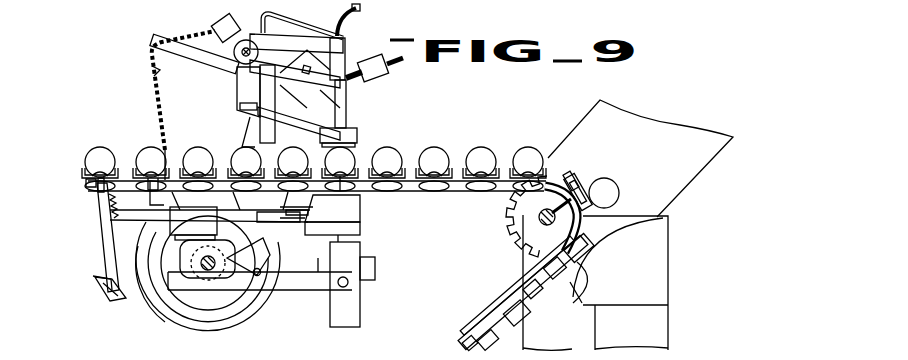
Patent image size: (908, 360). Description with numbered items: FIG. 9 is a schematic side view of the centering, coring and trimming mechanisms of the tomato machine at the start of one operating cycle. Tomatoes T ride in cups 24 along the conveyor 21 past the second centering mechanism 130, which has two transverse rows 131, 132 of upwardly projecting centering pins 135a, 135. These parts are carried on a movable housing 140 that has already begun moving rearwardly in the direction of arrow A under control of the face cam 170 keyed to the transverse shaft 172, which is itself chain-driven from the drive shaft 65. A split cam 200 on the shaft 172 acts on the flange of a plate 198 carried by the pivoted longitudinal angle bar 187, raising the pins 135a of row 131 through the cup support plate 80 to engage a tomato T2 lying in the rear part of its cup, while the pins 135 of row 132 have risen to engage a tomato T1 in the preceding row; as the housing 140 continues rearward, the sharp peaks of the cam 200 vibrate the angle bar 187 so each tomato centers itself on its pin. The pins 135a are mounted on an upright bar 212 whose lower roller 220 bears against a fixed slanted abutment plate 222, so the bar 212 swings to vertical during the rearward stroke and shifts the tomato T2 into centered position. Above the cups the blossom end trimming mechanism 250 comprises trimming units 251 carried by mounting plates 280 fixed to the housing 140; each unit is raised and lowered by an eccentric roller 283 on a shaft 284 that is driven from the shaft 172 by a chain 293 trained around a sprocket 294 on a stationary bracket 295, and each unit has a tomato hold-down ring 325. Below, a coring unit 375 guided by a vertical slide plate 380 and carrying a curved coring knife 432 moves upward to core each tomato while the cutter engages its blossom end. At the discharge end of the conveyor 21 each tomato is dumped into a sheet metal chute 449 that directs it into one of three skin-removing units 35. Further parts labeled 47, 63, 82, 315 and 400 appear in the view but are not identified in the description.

The conveyor 21 is at (78, 195).
The cups 24 is at (524, 319).
The skin-removing units 35 is at (672, 323).
The inclined conveyor 47 is at (527, 279).
The clamp 63 is at (550, 199).
The drive shaft 65 is at (579, 187).
The cup support plate 80 is at (517, 293).
The conveyor chain 82 is at (519, 192).
The second centering mechanism 130 is at (103, 238).
The transverse row of centering pins 131 is at (93, 193).
The transverse row of centering pins 132 is at (137, 168).
The centering pins 135 is at (157, 172).
The centering pins 135a is at (97, 181).
The movable housing 140 is at (318, 276).
The face cam 170 is at (187, 332).
The transverse shaft 172 is at (206, 266).
The longitudinal angle bar 187 is at (320, 215).
The plate 198 is at (210, 233).
The split cam 200 is at (200, 280).
The upright bar 212 is at (112, 259).
The roller 220 is at (123, 293).
The abutment plate 222 is at (98, 278).
The blossom end trimming mechanism 250 is at (366, 28).
The trimming unit 251 is at (362, 100).
The mounting plate 280 is at (244, 148).
The eccentric roller 283 is at (242, 60).
The shaft 284 is at (214, 30).
The chain 293 is at (150, 70).
The sprocket 294 is at (156, 64).
The stationary bracket 295 is at (165, 50).
The pipe 315 is at (335, 6).
The tomato hold-down ring 325 is at (368, 128).
The coring unit 375 is at (376, 229).
The vertical slide plate 380 is at (352, 322).
The wheel rim 400 is at (273, 290).
The curved coring knife 432 is at (346, 194).
The sheet metal chute 449 is at (666, 278).
The arrow A is at (422, 268).
The tomato T is at (525, 152).
The tomato T1 is at (141, 170).
The tomato T2 is at (87, 158).